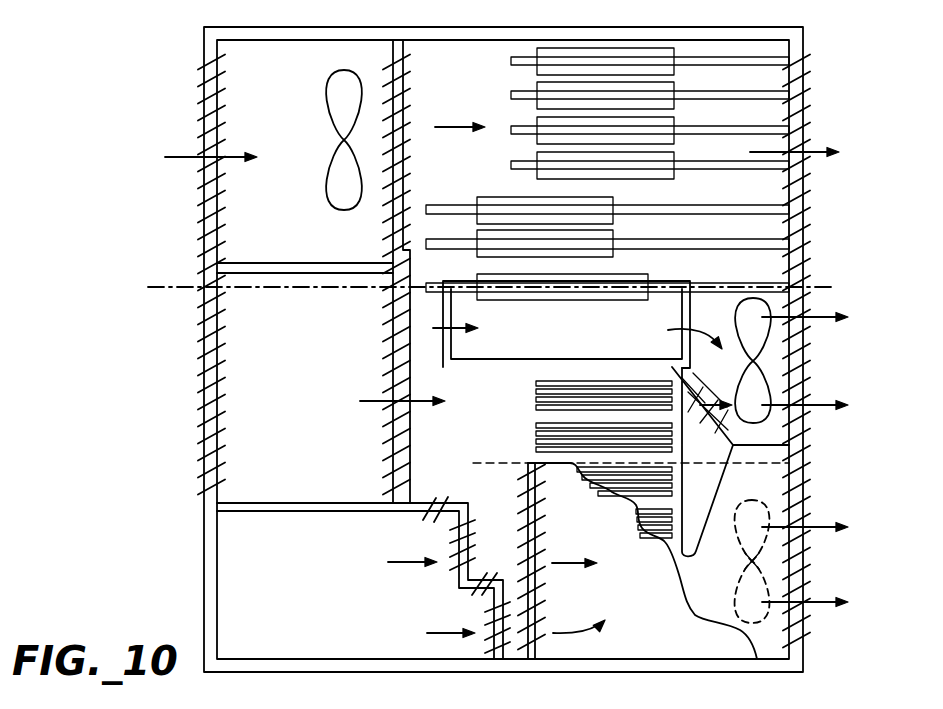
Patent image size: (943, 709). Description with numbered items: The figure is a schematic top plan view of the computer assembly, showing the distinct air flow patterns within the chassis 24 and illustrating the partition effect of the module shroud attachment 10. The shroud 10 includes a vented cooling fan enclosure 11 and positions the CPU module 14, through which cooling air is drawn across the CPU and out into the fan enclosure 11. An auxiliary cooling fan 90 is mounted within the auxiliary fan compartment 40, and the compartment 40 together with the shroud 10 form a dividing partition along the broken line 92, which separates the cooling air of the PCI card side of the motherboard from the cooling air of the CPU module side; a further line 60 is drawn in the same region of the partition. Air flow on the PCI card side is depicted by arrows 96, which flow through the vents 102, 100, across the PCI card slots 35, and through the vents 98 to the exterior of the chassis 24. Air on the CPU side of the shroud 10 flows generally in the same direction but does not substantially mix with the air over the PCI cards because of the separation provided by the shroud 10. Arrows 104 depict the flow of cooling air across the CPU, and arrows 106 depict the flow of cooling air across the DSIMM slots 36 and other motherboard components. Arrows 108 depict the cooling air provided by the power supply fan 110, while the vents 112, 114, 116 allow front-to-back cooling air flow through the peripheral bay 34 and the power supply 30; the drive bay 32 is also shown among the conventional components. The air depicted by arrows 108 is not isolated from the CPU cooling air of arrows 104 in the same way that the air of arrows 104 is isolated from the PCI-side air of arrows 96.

The module shroud attachment 10 is at (660, 286).
The vented cooling fan enclosure 11 is at (778, 462).
The CPU module 14 is at (507, 369).
The chassis 24 is at (200, 366).
The power supply 30 is at (604, 536).
The drive bay 32 is at (283, 368).
The peripheral bay 34 is at (283, 557).
The PCI card slots 35 is at (576, 36).
The DSIMM slots 36 is at (522, 434).
The auxiliary fan compartment 40 is at (283, 86).
The horizontal partition line 60 is at (427, 288).
The auxiliary cooling fan 90 is at (334, 127).
The broken line 92 is at (808, 287).
The arrows 96 is at (180, 156).
The vents 98 is at (808, 73).
The vent 100 is at (406, 87).
The vent 102 is at (200, 75).
The arrows 104 is at (460, 330).
The arrows 106 is at (368, 400).
The arrows 108 is at (410, 560).
The power supply fan 110 is at (735, 572).
The vent 112 is at (436, 502).
The vent 114 is at (537, 598).
The vent 116 is at (803, 558).